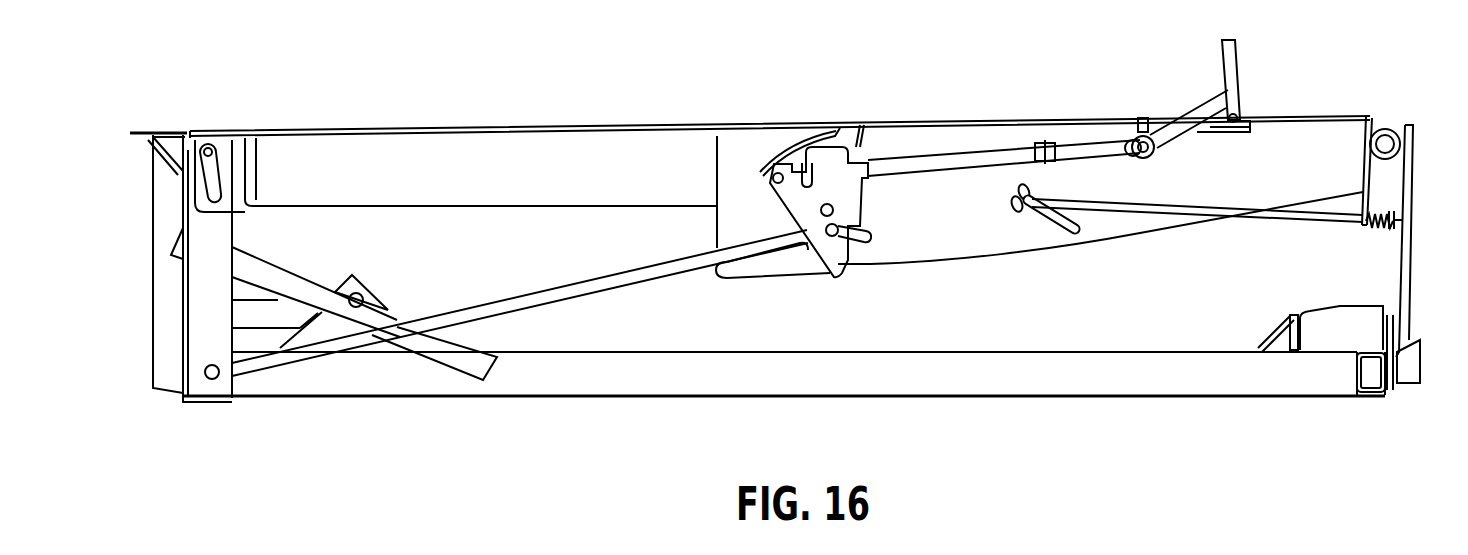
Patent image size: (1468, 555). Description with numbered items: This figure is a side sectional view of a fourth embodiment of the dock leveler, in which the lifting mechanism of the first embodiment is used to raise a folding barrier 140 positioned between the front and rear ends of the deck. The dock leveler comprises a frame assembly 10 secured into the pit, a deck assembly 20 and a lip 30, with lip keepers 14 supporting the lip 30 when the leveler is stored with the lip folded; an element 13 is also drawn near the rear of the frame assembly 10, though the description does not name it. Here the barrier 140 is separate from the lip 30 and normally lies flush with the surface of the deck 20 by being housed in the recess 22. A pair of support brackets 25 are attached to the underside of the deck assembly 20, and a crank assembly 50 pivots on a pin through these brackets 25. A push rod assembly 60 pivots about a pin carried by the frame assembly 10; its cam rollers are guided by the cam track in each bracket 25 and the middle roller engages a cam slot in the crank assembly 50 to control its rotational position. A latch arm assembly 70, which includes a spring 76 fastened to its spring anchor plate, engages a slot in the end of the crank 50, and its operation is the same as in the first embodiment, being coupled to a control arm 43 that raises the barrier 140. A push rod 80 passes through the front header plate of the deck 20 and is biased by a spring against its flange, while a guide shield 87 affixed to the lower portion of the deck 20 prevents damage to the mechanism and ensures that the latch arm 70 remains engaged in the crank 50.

The frame assembly 10 is at (676, 393).
The stop block 13 is at (1348, 270).
The lip keepers 14 is at (1412, 386).
The deck assembly 20 is at (590, 125).
The recess 22 is at (1160, 112).
The support brackets 25 is at (945, 256).
The lip assembly 30 is at (1412, 258).
The control arm 43 is at (1198, 100).
The crank assembly 50 is at (870, 212).
The push rod assembly 60 is at (570, 286).
The latch arm assembly 70 is at (920, 157).
The spring 76 is at (985, 166).
The push rod 80 is at (1278, 222).
The guide shield 87 is at (777, 145).
The barrier 140 is at (1240, 78).